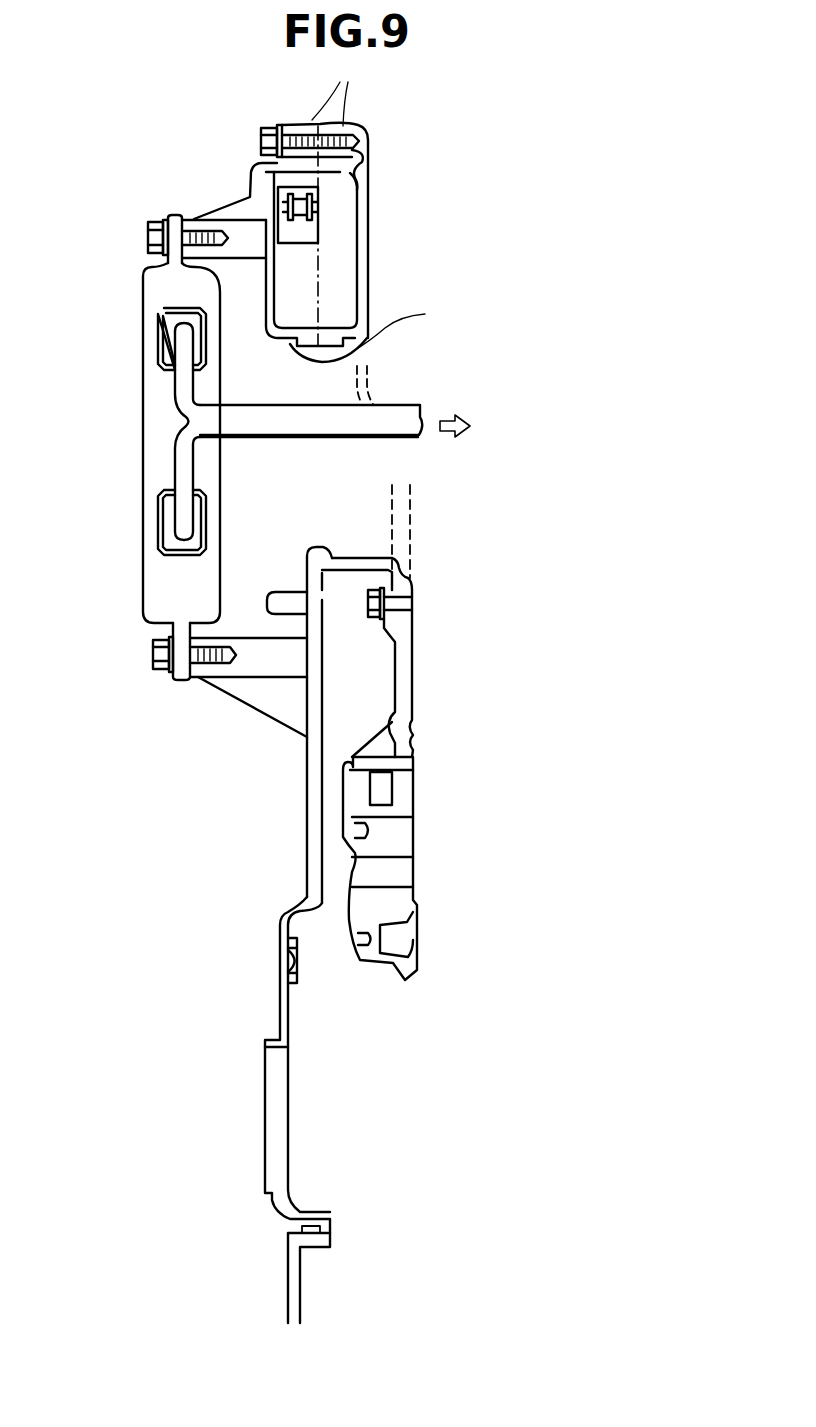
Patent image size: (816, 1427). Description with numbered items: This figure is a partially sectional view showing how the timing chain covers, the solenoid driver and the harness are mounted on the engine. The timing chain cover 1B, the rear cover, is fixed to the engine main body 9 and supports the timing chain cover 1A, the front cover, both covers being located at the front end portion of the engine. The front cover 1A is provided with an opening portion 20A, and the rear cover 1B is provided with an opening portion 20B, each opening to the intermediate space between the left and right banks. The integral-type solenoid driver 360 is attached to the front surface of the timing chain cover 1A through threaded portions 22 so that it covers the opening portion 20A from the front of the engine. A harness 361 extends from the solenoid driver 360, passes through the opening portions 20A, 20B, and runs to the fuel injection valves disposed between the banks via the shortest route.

The timing chain cover (front cover) 1A is at (298, 122).
The timing chain cover (rear cover) 1B is at (358, 127).
The threaded portions 22 is at (191, 217).
The solenoid driver 360 is at (128, 599).
The harness 361 is at (403, 403).
The opening portion 20A is at (312, 571).
The opening portion 20B is at (343, 560).
The engine main body 9 is at (518, 727).